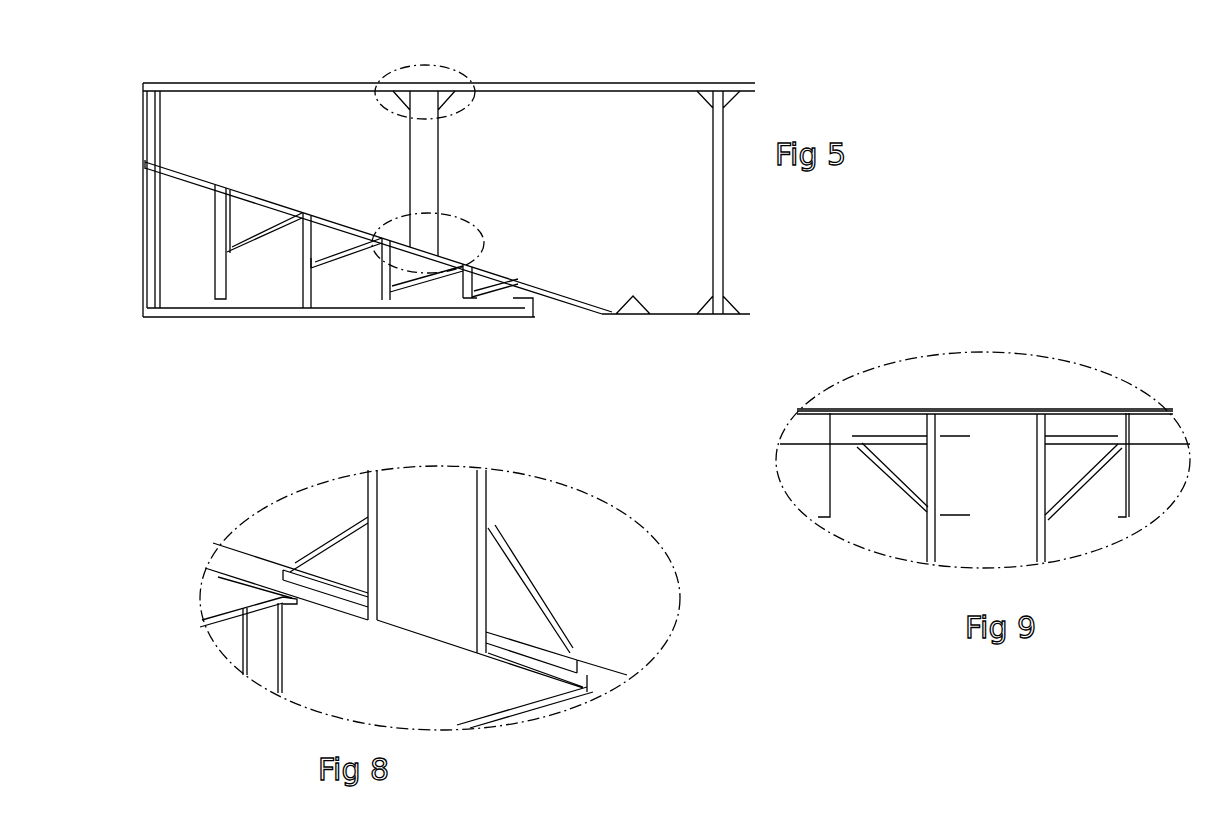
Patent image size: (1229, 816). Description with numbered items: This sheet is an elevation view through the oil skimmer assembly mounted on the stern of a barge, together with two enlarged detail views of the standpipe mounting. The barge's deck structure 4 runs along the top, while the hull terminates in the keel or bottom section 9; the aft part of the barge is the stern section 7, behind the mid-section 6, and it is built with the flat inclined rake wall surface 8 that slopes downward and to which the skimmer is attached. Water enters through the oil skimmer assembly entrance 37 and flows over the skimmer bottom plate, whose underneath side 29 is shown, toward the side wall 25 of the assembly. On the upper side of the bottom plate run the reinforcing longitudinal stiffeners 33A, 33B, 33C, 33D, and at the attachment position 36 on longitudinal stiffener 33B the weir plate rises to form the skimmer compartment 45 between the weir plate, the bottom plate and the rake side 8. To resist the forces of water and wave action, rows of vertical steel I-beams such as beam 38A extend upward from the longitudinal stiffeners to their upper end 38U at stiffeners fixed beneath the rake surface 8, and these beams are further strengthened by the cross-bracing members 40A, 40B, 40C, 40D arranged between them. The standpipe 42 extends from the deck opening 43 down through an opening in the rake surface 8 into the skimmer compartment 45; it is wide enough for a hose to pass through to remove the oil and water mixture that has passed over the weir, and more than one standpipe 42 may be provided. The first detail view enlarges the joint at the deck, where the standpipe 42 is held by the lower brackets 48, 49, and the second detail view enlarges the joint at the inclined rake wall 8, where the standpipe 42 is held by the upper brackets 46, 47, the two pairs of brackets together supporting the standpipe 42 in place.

In FIG. 5, the deck structure 4 is at (147, 302).
In FIG. 5, the mid-section 6 is at (262, 195).
In FIG. 5, the stern section 7 is at (130, 145).
In FIG. 9, the stern section 7 is at (1138, 415).
In FIG. 5, the rake wall surface 8 is at (172, 165).
In FIG. 5, the keel or bottom section 9 is at (398, 70).
In FIG. 5, the side wall 25 is at (547, 308).
In FIG. 5, the underneath side 29 is at (393, 317).
In FIG. 5, the longitudinal stiffener 33A is at (222, 305).
In FIG. 5, the longitudinal stiffener 33B is at (300, 303).
In FIG. 5, the longitudinal stiffener 33C is at (365, 312).
In FIG. 5, the longitudinal stiffener 33D is at (475, 299).
In FIG. 5, the attachment position 36 is at (318, 300).
In FIG. 5, the oil skimmer assembly entrance 37 is at (196, 264).
In FIG. 5, the vertical steel I-beam 38A is at (217, 224).
In FIG. 5, the upper end of vertical I-beam 38U is at (242, 200).
In FIG. 5, the cross-bracing member 40A is at (253, 227).
In FIG. 5, the cross-bracing member 40B is at (326, 260).
In FIG. 5, the cross-bracing member 40C is at (450, 252).
In FIG. 5, the cross-bracing member 40D is at (497, 265).
In FIG. 5, the standpipe 42 is at (440, 160).
In FIG. 8, the standpipe 42 is at (488, 503).
In FIG. 9, the standpipe 42 is at (1045, 540).
In FIG. 5, the deck opening 43 is at (425, 70).
In FIG. 5, the skimmer compartment 45 is at (358, 294).
In FIG. 9, the upper bracket 46 is at (893, 488).
In FIG. 9, the upper bracket 47 is at (1077, 490).
In FIG. 8, the lower bracket 48 is at (333, 533).
In FIG. 8, the lower bracket 49 is at (530, 588).